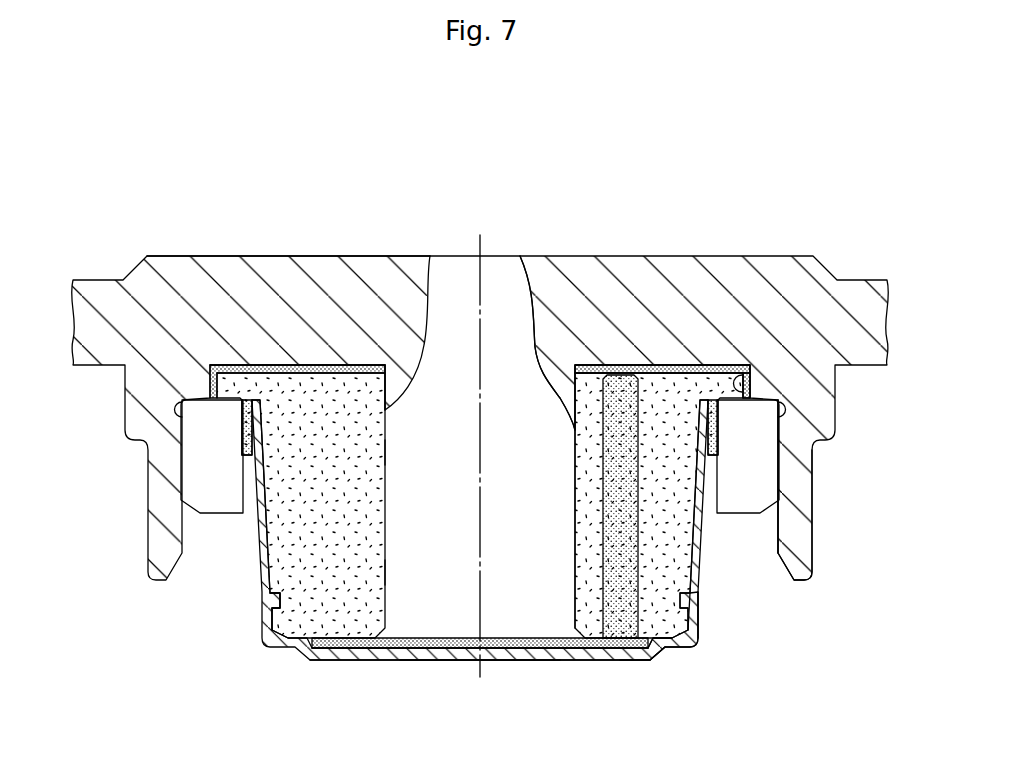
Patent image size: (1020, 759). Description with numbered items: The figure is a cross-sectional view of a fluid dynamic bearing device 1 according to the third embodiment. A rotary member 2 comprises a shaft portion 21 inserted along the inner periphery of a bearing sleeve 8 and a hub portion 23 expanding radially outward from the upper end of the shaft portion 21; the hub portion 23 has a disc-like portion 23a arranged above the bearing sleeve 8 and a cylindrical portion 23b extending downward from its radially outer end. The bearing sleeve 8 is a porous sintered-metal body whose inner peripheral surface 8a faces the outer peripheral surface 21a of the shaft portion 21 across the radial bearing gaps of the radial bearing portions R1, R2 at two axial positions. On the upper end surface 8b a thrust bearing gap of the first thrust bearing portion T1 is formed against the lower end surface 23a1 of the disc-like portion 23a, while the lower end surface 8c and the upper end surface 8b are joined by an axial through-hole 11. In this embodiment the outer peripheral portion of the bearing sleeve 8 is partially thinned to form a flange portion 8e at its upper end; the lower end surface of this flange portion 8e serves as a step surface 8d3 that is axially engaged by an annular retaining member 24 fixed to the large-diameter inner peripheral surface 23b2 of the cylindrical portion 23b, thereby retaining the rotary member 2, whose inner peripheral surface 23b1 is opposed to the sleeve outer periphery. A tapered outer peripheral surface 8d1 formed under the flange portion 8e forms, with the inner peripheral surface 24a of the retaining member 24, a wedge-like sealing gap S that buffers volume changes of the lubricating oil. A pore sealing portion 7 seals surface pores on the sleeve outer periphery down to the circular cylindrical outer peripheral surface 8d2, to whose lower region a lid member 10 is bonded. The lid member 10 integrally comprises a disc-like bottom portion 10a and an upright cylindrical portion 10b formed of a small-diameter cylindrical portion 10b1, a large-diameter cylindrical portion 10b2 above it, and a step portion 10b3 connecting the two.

The fluid dynamic bearing device 1 is at (602, 191).
The rotary member 2 is at (496, 257).
The pore sealing portion 7 is at (262, 542).
The bearing sleeve 8 is at (305, 600).
The inner peripheral surface 8a is at (573, 582).
The upper end surface 8b is at (273, 368).
The lower end surface 8c is at (345, 648).
The tapered outer peripheral surface 8d1 is at (258, 478).
The circular cylindrical outer peripheral surface 8d2 is at (263, 613).
The step surface 8d3 is at (735, 416).
The flange portion 8e is at (729, 395).
The lid member 10 is at (438, 660).
The bottom portion 10a is at (513, 660).
The cylindrical portion 10b is at (793, 606).
The small-diameter cylindrical portion 10b1 is at (650, 660).
The large-diameter cylindrical portion 10b2 is at (690, 620).
The step portion 10b3 is at (663, 648).
The axial through-hole 11 is at (632, 557).
The shaft portion 21 is at (507, 357).
The outer peripheral surface 21a is at (385, 428).
The hub portion 23 is at (633, 257).
The disc-like portion 23a is at (224, 273).
The lower end surface 23a1 is at (335, 368).
The cylindrical portion 23b is at (803, 545).
The inner peripheral surface 23b1 is at (737, 388).
The large-diameter inner peripheral surface 23b2 is at (778, 455).
The annular retaining member 24 is at (192, 457).
The inner peripheral surface 24a is at (715, 494).
The radial bearing portion R1 is at (385, 452).
The radial bearing portion R2 is at (385, 572).
The sealing gap S is at (243, 424).
The first thrust bearing portion T1 is at (683, 371).